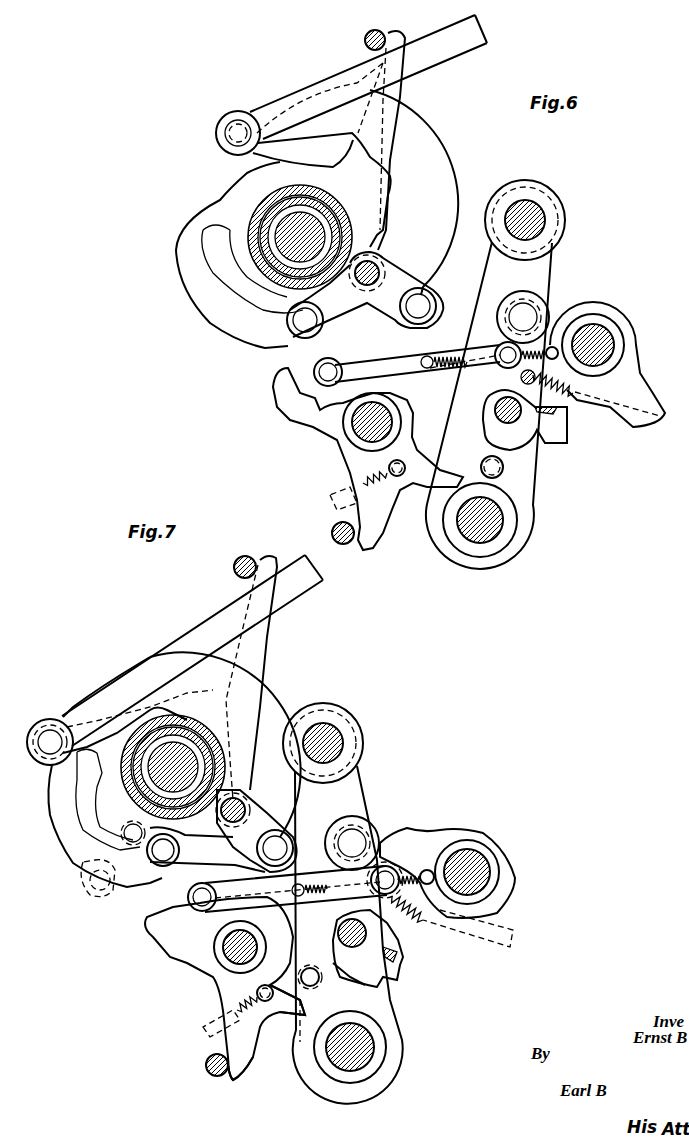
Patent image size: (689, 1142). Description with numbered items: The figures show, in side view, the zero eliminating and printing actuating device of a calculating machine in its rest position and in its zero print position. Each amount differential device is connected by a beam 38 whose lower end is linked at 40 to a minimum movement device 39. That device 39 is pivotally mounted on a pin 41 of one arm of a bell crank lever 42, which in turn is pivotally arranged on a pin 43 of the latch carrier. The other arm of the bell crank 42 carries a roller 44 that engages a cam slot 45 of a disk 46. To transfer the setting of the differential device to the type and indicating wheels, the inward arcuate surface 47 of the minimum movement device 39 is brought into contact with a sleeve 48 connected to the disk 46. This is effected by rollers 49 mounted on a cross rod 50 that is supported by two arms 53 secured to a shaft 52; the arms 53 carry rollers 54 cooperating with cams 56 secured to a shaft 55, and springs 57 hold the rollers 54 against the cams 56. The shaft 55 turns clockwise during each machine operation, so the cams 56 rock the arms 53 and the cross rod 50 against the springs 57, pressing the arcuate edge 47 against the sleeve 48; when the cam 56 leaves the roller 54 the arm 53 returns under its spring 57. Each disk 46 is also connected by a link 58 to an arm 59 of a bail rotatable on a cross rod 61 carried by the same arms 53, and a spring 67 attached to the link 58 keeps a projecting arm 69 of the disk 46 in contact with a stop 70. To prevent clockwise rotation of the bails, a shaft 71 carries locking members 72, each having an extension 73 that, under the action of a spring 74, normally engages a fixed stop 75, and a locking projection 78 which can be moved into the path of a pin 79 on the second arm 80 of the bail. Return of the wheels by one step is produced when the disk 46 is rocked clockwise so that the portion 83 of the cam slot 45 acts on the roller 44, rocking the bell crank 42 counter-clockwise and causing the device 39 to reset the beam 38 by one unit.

In FIG. 6, the beam 38 is at (484, 33).
In FIG. 7, the beam 38 is at (295, 588).
In FIG. 6, the minimum movement device 39 is at (430, 197).
In FIG. 6, the link point 40 is at (237, 122).
In FIG. 7, the link point 40 is at (50, 735).
In FIG. 6, the pin 41 is at (430, 300).
In FIG. 7, the pin 41 is at (290, 836).
In FIG. 6, the bell crank lever 42 is at (365, 258).
In FIG. 7, the bell crank lever 42 is at (233, 797).
In FIG. 6, the pin 43 is at (377, 267).
In FIG. 7, the pin 43 is at (250, 800).
In FIG. 6, the roller 44 is at (270, 343).
In FIG. 7, the roller 44 is at (148, 886).
In FIG. 6, the cam slot 45 is at (235, 317).
In FIG. 7, the cam slot 45 is at (83, 817).
In FIG. 6, the disk 46 is at (257, 185).
In FIG. 7, the disk 46 is at (60, 783).
In FIG. 6, the inward arcuate surface 47 is at (398, 182).
In FIG. 6, the sleeve 48 is at (343, 212).
In FIG. 6, the roller 49 is at (555, 205).
In FIG. 7, the roller 49 is at (358, 738).
In FIG. 6, the cross rod 50 is at (528, 212).
In FIG. 7, the cross rod 50 is at (333, 737).
In FIG. 6, the shaft 52 is at (495, 527).
In FIG. 7, the shaft 52 is at (372, 1046).
In FIG. 6, the arm 53 is at (533, 277).
In FIG. 7, the arm 53 is at (345, 790).
In FIG. 6, the roller 54 is at (543, 303).
In FIG. 7, the roller 54 is at (372, 828).
In FIG. 6, the shaft 55 is at (601, 330).
In FIG. 7, the shaft 55 is at (467, 852).
In FIG. 6, the cam 56 is at (640, 392).
In FIG. 7, the cam 56 is at (405, 848).
In FIG. 6, the spring 57 is at (575, 398).
In FIG. 7, the spring 57 is at (423, 919).
In FIG. 7, the link 58 is at (283, 887).
In FIG. 7, the arm 59 is at (372, 886).
In FIG. 7, the cross rod 61 is at (367, 933).
In FIG. 7, the spring 67 is at (321, 893).
In FIG. 6, the projecting arm 69 is at (398, 33).
In FIG. 6, the stop 70 is at (377, 30).
In FIG. 7, the shaft 71 is at (253, 940).
In FIG. 7, the locking member 72 is at (200, 947).
In FIG. 7, the extension 73 is at (243, 1060).
In FIG. 7, the spring 74 is at (237, 1008).
In FIG. 7, the fixed stop 75 is at (206, 1065).
In FIG. 7, the locking projection 78 is at (305, 1021).
In FIG. 7, the pin 79 is at (316, 983).
In FIG. 7, the second arm 80 is at (333, 963).
In FIG. 7, the portion of cam slot 83 is at (160, 897).